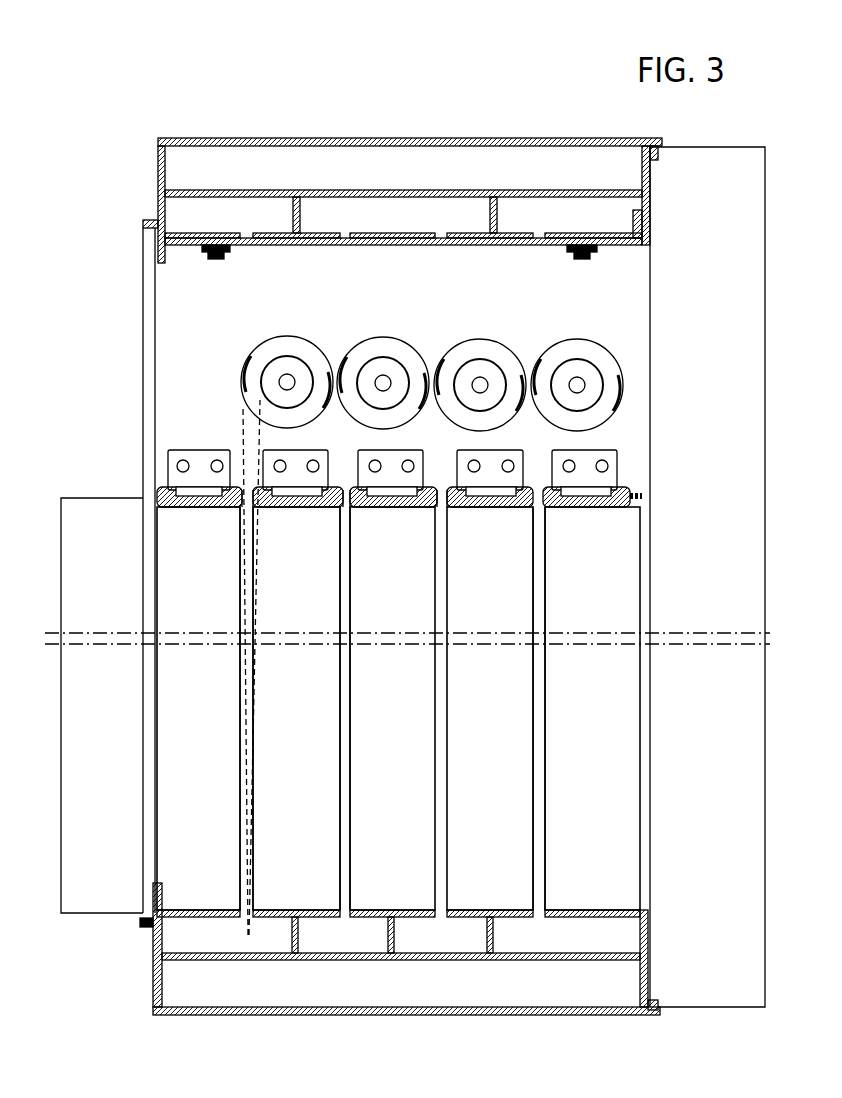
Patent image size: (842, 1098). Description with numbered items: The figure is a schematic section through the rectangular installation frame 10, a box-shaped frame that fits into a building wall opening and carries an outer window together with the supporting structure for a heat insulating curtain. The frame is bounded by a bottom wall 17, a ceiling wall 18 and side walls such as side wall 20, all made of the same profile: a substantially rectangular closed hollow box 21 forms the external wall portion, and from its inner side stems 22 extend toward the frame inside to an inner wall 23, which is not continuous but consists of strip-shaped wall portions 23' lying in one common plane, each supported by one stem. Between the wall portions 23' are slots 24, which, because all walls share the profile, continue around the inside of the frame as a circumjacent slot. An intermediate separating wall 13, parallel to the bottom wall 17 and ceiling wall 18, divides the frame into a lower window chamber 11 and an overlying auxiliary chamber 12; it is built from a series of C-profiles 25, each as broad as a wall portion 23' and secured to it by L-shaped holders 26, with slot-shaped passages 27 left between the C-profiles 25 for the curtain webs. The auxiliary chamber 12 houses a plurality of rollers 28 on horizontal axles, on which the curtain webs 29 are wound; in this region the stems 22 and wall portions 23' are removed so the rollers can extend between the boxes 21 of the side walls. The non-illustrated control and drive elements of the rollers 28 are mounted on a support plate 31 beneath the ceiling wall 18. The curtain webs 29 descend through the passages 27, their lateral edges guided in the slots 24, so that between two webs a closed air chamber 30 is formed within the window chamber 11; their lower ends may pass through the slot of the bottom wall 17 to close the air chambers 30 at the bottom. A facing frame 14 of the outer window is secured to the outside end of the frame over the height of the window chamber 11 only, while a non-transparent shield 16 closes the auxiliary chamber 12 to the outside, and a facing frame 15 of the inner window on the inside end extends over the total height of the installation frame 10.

The installation frame 10 is at (403, 567).
The window chamber 11 is at (406, 757).
The auxiliary chamber 12 is at (426, 282).
The intermediate separating wall 13 is at (630, 487).
The facing frame of outer window 14 is at (103, 505).
The facing frame of inner window 15 is at (680, 162).
The non-transparent shield 16 is at (148, 263).
The bottom wall 17 is at (176, 1015).
The ceiling wall 18 is at (375, 138).
The side wall 20 is at (625, 578).
The rectangular box 21 is at (399, 997).
The stems 22 is at (163, 936).
The inner wall 23 is at (592, 890).
The strip-shaped wall portions 23' is at (345, 737).
The slots 24 is at (250, 905).
The C-profiles 25 is at (205, 508).
The L-shaped holders 26 is at (195, 462).
The slot-shaped passages 27 is at (340, 512).
The rollers 28 is at (289, 372).
The curtain webs 29 is at (352, 335).
The air chamber 30 is at (306, 695).
The support plate 31 is at (627, 248).